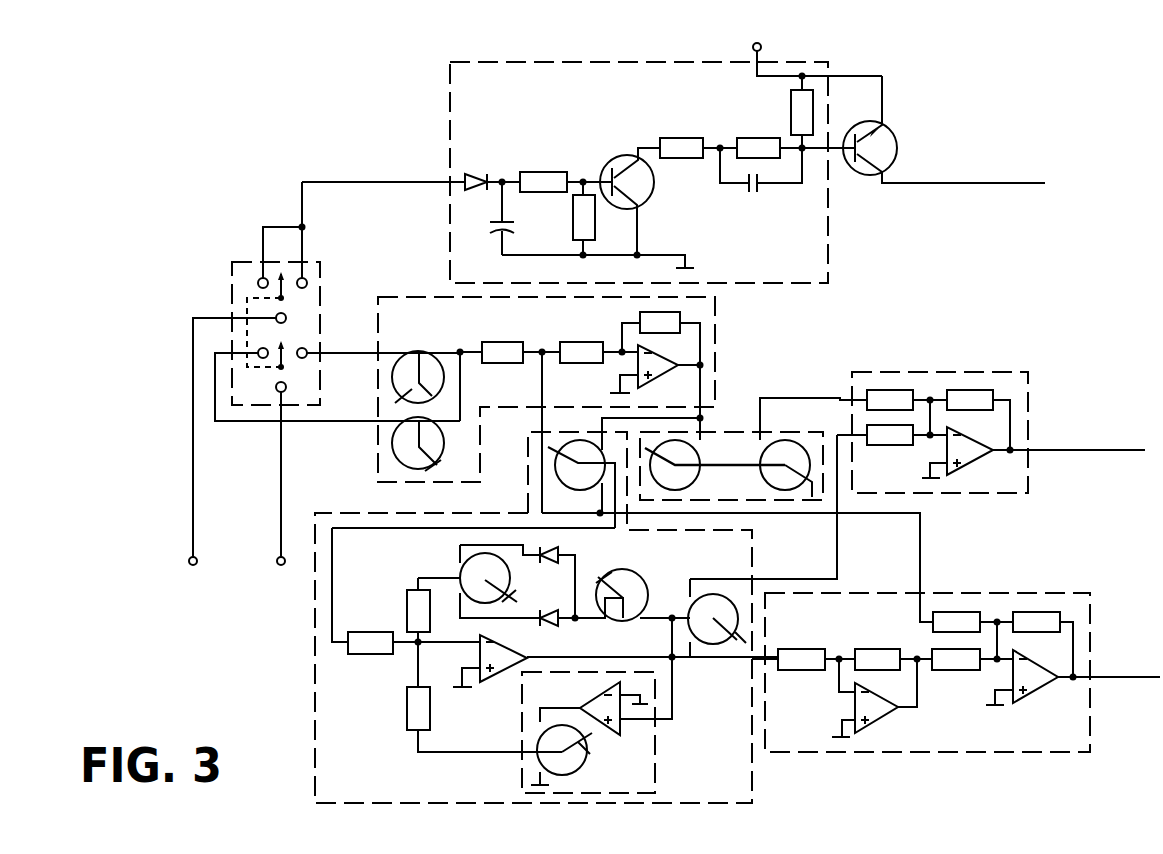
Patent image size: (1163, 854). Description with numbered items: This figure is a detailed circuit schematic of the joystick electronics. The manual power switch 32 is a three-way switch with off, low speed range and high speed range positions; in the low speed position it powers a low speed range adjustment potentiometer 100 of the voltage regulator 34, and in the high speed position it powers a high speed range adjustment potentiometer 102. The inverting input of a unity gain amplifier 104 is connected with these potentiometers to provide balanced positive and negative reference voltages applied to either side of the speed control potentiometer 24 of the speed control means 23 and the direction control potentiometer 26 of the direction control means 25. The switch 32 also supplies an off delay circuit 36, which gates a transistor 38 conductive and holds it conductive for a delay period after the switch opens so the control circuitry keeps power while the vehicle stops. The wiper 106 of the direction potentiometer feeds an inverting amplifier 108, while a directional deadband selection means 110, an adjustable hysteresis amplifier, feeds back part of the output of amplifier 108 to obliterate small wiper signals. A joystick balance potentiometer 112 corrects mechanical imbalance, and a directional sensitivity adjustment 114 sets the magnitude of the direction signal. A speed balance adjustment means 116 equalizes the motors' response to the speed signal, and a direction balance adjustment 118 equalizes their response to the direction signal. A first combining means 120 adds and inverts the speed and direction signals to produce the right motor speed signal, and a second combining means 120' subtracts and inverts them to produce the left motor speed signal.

The off delay circuit 36 is at (673, 157).
The transistor 38 is at (863, 175).
The manual power switch 32 is at (232, 288).
The voltage regulator 34 is at (546, 405).
The low speed range adjustment potentiometer 100 is at (393, 402).
The high speed range adjustment potentiometer 102 is at (453, 450).
The unity gain amplifier 104 is at (667, 358).
The wiper 106 is at (709, 502).
The direction control potentiometer 26 is at (562, 486).
The speed control means 23 is at (753, 447).
The speed control potentiometer 24 is at (684, 499).
The speed balance adjustment means 116 is at (793, 428).
The first combining means 120 is at (917, 454).
The second combining means 120' is at (957, 694).
The direction control means 25 is at (520, 643).
The joystick balance potentiometer 112 is at (482, 553).
The directional sensitivity adjustment 114 is at (605, 574).
The direction balance adjustment 118 is at (712, 590).
The inverting amplifier 108 is at (527, 657).
The directional deadband selection means 110 is at (522, 708).